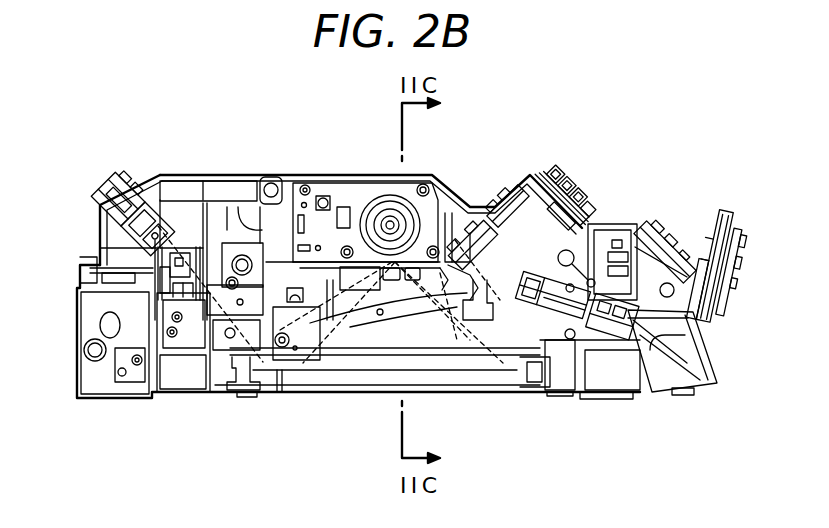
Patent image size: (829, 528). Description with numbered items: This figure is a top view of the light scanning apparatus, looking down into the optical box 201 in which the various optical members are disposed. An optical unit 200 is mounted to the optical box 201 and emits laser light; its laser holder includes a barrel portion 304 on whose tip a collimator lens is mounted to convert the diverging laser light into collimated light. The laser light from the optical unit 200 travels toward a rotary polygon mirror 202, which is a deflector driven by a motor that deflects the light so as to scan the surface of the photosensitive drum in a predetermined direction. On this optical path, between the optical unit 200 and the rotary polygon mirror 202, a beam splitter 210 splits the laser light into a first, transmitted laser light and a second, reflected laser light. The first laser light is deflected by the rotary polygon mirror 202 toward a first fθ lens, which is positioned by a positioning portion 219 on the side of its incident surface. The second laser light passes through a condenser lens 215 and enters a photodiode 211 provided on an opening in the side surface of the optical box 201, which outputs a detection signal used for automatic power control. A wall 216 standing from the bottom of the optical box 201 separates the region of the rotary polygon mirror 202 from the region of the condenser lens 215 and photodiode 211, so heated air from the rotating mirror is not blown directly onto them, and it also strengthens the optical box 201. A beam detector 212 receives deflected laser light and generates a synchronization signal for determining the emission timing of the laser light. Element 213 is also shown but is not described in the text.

The optical unit 200 is at (703, 330).
The optical box 201 is at (340, 393).
The rotary polygon mirror 202 is at (373, 215).
The beam splitter 210 is at (467, 204).
The photodiode 211 is at (553, 178).
The beam detector 212 is at (122, 182).
The connector 213 is at (160, 215).
The condenser lens 215 is at (505, 215).
The wall 216 is at (445, 212).
The positioning portion 219 is at (455, 345).
The barrel portion 304 is at (605, 327).